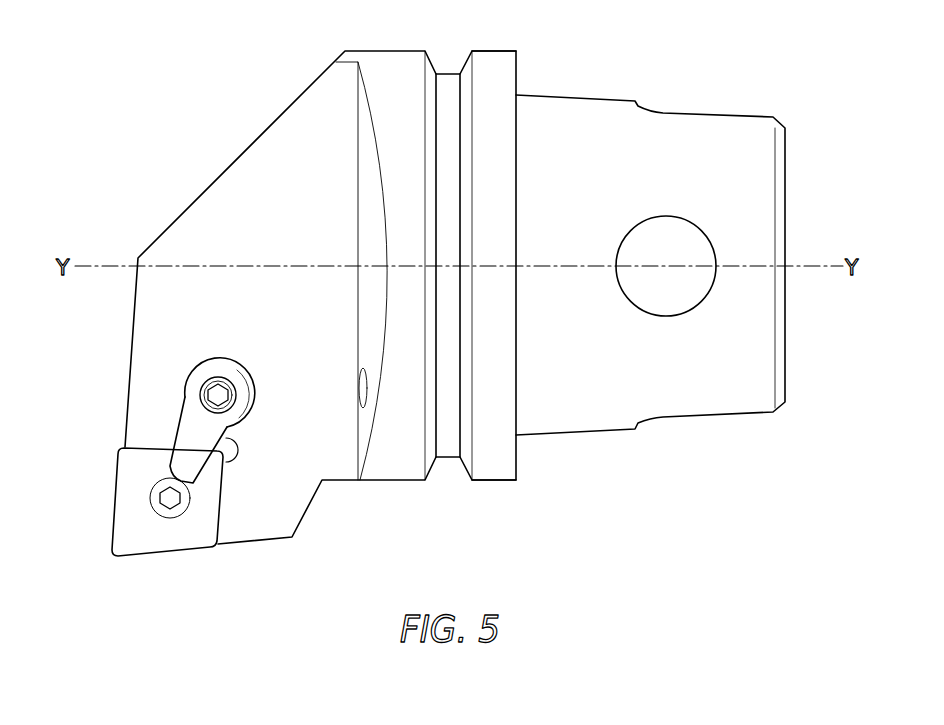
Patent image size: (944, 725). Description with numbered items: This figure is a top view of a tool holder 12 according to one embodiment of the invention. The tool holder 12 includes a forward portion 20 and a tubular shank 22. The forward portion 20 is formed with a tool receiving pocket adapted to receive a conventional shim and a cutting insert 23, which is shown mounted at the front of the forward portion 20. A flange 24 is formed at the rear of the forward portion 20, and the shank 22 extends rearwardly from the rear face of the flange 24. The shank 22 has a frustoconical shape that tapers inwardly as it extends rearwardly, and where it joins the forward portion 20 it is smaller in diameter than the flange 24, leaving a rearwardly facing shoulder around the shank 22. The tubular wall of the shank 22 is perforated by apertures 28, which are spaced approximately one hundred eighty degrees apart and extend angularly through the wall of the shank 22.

The tool holder 12 is at (223, 65).
The forward portion 20 is at (172, 207).
The tubular shank 22 is at (610, 115).
The cutting insert 23 is at (125, 503).
The flange 24 is at (518, 73).
The apertures 28 is at (667, 220).